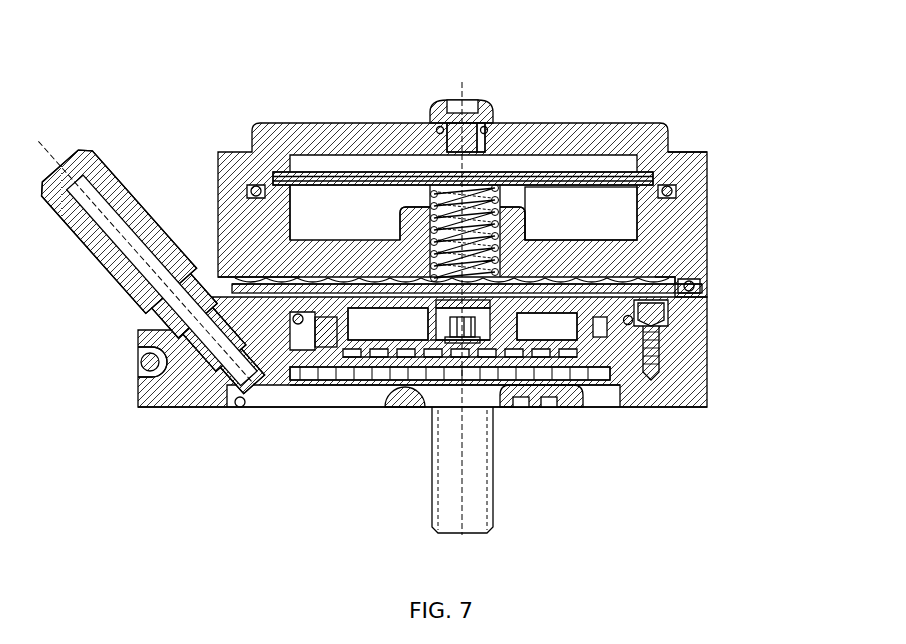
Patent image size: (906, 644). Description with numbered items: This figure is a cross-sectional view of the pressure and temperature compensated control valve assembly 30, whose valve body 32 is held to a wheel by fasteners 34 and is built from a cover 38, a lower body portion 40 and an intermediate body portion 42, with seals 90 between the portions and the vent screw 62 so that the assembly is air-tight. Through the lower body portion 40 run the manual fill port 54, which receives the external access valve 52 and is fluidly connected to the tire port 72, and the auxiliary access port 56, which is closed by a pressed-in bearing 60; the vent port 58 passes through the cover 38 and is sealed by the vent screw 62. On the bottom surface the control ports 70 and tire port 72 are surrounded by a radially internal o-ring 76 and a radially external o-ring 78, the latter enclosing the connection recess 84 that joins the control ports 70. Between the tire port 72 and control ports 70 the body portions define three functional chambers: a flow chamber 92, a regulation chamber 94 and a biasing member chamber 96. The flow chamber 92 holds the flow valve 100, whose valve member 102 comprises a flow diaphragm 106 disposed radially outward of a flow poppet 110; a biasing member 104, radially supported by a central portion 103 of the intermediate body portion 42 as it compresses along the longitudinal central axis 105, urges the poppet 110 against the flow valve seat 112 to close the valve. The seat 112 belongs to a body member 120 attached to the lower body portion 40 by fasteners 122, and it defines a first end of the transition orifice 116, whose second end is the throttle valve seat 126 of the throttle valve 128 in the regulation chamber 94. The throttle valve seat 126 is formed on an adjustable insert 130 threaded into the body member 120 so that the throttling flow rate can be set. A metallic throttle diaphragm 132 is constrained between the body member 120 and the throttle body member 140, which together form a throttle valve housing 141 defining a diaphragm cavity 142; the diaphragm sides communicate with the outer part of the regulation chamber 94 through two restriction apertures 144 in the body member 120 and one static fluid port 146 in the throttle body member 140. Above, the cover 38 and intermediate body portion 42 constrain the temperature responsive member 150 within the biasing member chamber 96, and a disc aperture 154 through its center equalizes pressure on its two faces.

The valve assembly 30 is at (406, 308).
The valve body 32 is at (413, 277).
The fasteners 34 is at (493, 520).
The cover 38 is at (403, 130).
The lower body portion 40 is at (148, 395).
The intermediate body portion 42 is at (683, 190).
The external access valve 52 is at (146, 288).
The manual fill port 54 is at (184, 306).
The auxiliary access port 56 is at (214, 339).
The vent port 58 is at (484, 140).
The bearing 60 is at (148, 370).
The vent screw 62 is at (447, 105).
The control ports 70 is at (281, 400).
The tire port 72 is at (490, 397).
The radially internal o-ring 76 is at (523, 404).
The radially external o-ring 78 is at (548, 404).
The connection recess 84 is at (385, 385).
The seals 90 is at (487, 130).
The flow chamber 92 is at (265, 292).
The regulation chamber 94 is at (312, 352).
The biasing member chamber 96 is at (581, 213).
The flow valve 100 is at (335, 310).
The valve member 102 is at (253, 282).
The central portion 103 is at (508, 222).
The biasing member 104 is at (430, 192).
The longitudinal central axis 105 is at (464, 92).
The flow diaphragm 106 is at (675, 280).
The flow poppet 110 is at (484, 287).
The flow valve seat 112 is at (478, 293).
The transition orifice 116 is at (400, 267).
The body member 120 is at (242, 371).
The fasteners 122 is at (659, 316).
The throttle valve seat 126 is at (487, 335).
The throttle valve 128 is at (447, 347).
The adjustable insert 130 is at (488, 323).
The throttle diaphragm 132 is at (340, 342).
The throttle body member 140 is at (451, 345).
The throttle valve housing 141 is at (278, 273).
The diaphragm cavity 142 is at (388, 324).
The restriction aperture 144 is at (589, 330).
The static fluid port 146 is at (550, 365).
The temperature responsive member 150 is at (445, 297).
The disc aperture 154 is at (473, 177).